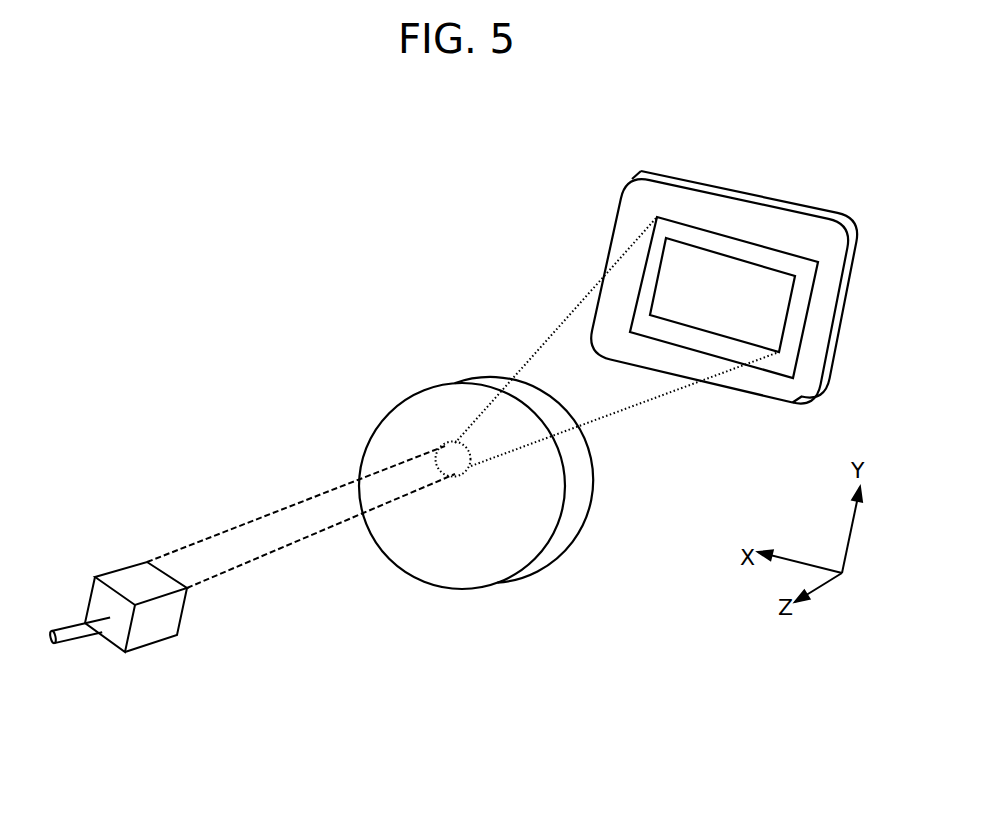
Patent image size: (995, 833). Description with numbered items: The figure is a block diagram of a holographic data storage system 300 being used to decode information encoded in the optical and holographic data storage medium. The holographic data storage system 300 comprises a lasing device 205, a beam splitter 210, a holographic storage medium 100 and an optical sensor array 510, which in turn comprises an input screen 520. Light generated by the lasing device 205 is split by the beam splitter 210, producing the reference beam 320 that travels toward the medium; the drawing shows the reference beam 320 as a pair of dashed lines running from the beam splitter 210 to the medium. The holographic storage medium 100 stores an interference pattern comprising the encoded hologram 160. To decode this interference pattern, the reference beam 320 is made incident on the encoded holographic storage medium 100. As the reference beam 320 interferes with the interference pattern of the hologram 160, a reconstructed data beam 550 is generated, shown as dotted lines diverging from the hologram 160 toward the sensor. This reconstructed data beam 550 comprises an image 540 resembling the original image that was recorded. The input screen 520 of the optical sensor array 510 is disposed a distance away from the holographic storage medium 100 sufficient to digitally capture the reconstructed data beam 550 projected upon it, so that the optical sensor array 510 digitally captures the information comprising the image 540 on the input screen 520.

The holographic storage medium 100 is at (476, 556).
The encoded hologram 160 is at (458, 463).
The lasing device 205 is at (82, 635).
The beam splitter 210 is at (177, 613).
The holographic data storage system 300 is at (378, 693).
The reference beam 320 is at (280, 522).
The optical sensor array 510 is at (724, 307).
The input screen 520 is at (683, 178).
The image 540 is at (758, 255).
The reconstructed data beam 550 is at (553, 333).